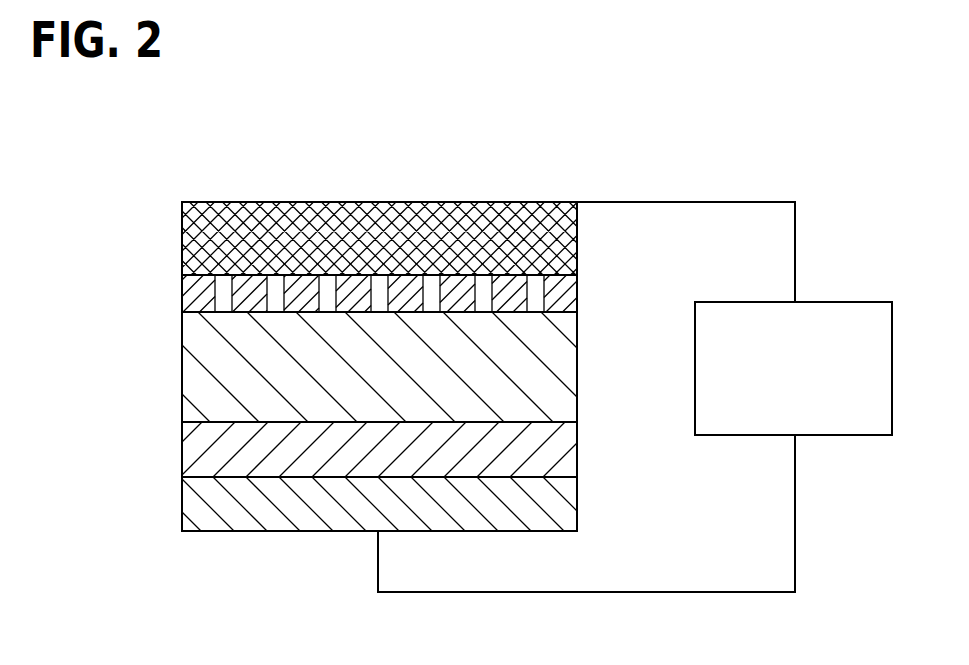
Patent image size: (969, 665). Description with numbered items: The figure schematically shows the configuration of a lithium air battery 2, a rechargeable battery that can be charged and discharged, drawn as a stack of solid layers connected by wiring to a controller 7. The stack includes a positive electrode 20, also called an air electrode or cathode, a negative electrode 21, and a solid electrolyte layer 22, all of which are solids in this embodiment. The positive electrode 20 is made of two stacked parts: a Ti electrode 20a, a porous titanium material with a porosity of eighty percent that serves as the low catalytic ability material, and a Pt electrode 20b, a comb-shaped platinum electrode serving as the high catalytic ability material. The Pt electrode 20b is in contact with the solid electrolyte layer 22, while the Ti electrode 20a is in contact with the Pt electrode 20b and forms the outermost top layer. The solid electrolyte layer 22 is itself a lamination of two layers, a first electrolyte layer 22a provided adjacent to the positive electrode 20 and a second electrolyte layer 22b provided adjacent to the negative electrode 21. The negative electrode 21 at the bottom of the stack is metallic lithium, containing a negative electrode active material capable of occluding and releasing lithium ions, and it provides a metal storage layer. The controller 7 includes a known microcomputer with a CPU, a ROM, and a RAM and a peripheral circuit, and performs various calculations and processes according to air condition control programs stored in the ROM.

The lithium air battery 2 is at (417, 177).
The positive electrode 20 is at (92, 213).
The Ti electrode 20a is at (182, 232).
The Pt electrode 20b is at (182, 287).
The solid electrolyte layer 22 is at (92, 342).
The first electrolyte layer 22a is at (182, 362).
The second electrolyte layer 22b is at (182, 445).
The negative electrode 21 is at (182, 496).
The controller 7 is at (847, 302).